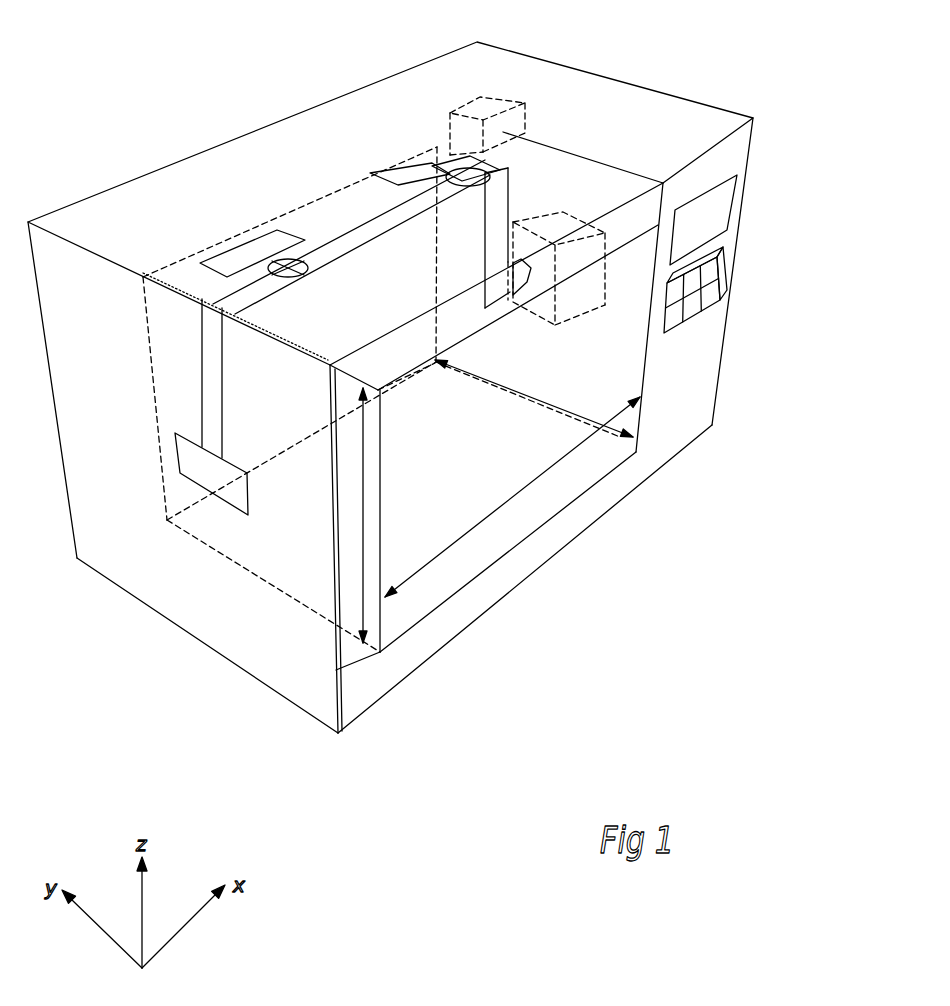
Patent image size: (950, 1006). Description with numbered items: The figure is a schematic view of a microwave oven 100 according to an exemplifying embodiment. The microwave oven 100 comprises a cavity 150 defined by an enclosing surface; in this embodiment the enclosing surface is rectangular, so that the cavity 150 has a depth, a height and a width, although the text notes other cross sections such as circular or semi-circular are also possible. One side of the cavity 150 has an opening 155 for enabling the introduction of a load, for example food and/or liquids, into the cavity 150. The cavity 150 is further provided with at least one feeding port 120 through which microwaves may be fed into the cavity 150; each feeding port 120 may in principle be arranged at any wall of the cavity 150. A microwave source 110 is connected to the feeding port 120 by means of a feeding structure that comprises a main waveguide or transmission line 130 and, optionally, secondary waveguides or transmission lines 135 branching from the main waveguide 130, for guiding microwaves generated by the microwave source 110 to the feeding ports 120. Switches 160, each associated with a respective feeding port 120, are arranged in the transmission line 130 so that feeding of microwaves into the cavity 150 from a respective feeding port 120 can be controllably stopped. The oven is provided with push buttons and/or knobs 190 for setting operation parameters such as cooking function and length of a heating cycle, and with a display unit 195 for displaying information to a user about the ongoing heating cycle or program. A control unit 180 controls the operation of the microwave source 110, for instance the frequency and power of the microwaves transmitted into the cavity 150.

The microwave oven 100 is at (735, 52).
The microwave source 110 is at (573, 300).
The feeding port 120 is at (220, 270).
The main waveguide or transmission line 130 is at (330, 247).
The secondary waveguide or transmission line 135 is at (437, 162).
The cavity 150 is at (470, 448).
The opening 155 is at (592, 464).
The switch 160 is at (447, 178).
The control unit 180 is at (503, 106).
The push buttons and/or knobs 190 is at (702, 292).
The display unit 195 is at (720, 205).